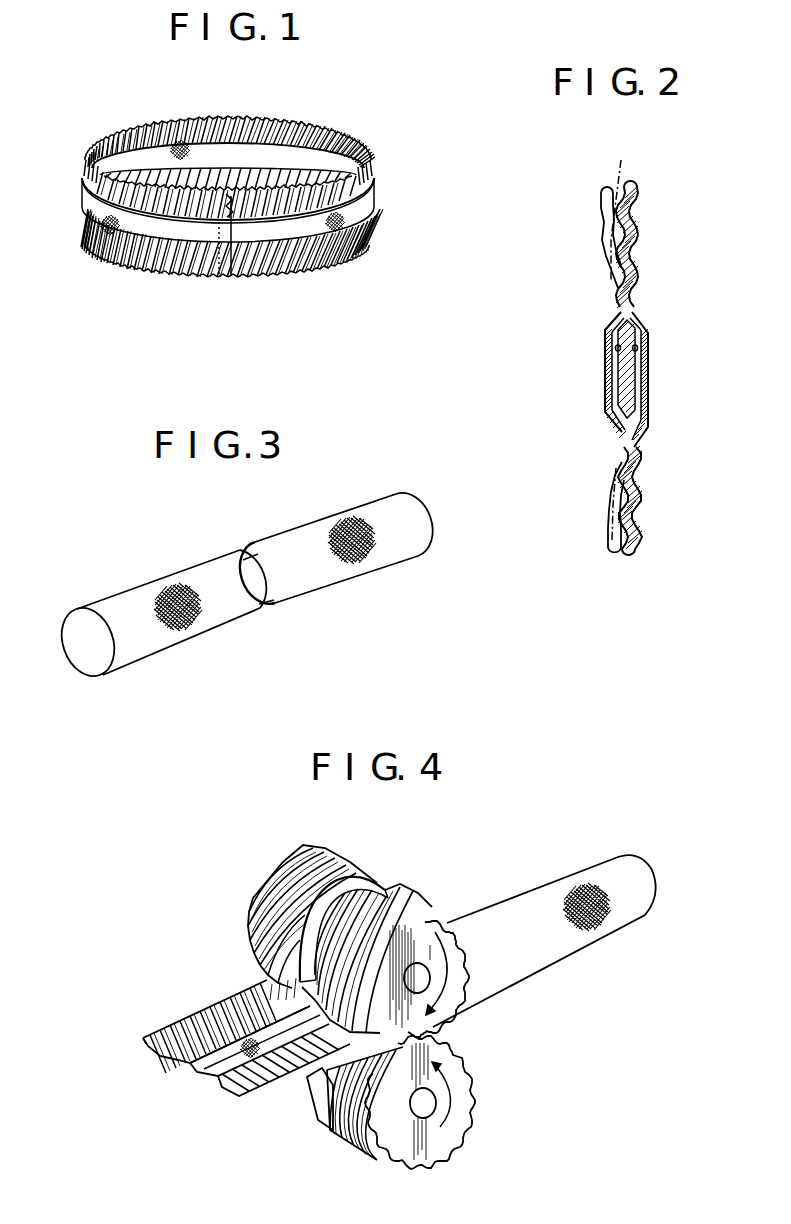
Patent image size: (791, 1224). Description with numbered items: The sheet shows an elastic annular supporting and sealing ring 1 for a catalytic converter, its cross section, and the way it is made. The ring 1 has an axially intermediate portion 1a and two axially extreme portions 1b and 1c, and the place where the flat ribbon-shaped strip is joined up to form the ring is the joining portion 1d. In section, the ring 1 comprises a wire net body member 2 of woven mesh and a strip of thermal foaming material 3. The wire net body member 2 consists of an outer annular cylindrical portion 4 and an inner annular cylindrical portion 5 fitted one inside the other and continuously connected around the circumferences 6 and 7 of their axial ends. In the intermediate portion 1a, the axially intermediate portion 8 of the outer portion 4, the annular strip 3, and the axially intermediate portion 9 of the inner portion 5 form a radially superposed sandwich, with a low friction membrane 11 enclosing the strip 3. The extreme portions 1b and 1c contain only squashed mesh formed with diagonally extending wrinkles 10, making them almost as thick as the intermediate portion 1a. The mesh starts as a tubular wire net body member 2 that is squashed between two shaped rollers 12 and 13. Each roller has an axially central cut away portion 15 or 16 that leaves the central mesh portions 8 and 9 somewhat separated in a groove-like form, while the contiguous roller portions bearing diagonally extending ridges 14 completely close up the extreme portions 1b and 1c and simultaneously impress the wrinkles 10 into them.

In FIG. 1, the annular supporting and sealing ring 1 is at (226, 198).
In FIG. 2, the annular supporting and sealing ring 1 is at (627, 360).
In FIG. 1, the axially intermediate portion 1a is at (372, 195).
In FIG. 2, the axially intermediate portion 1a is at (636, 383).
In FIG. 1, the axially extreme portion 1b is at (240, 141).
In FIG. 2, the axially extreme portion 1b is at (630, 225).
In FIG. 1, the axially extreme portion 1c is at (248, 255).
In FIG. 2, the axially extreme portion 1c is at (621, 512).
In FIG. 1, the joining portion 1d is at (233, 277).
In FIG. 1, the wire net body member 2 is at (322, 126).
In FIG. 2, the wire net body member 2 is at (638, 217).
In FIG. 3, the wire net body member 2 is at (144, 582).
In FIG. 4, the wire net body member 2 is at (529, 899).
In FIG. 1, the strip of thermal foaming material 3 is at (368, 212).
In FIG. 2, the strip of thermal foaming material 3 is at (628, 380).
In FIG. 1, the outer annular cylindrical portion 4 is at (369, 164).
In FIG. 2, the outer annular cylindrical portion 4 is at (605, 200).
In FIG. 4, the outer annular cylindrical portion 4 is at (236, 1045).
In FIG. 1, the inner annular cylindrical portion 5 is at (363, 138).
In FIG. 2, the inner annular cylindrical portion 5 is at (650, 289).
In FIG. 4, the inner annular cylindrical portion 5 is at (163, 1050).
In FIG. 1, the circumference of axial end 6 is at (91, 144).
In FIG. 2, the circumference of axial end 6 is at (635, 186).
In FIG. 1, the circumference of axial end 7 is at (113, 260).
In FIG. 2, the circumference of axial end 7 is at (641, 555).
In FIG. 2, the axially intermediate portion of outer cylindrical portion 8 is at (614, 348).
In FIG. 4, the axially intermediate portion of outer cylindrical portion 8 is at (193, 1073).
In FIG. 2, the axially intermediate portion of inner cylindrical portion 9 is at (639, 348).
In FIG. 4, the axially intermediate portion of inner cylindrical portion 9 is at (213, 1077).
In FIG. 1, the diagonally extending wrinkles 10 is at (232, 115).
In FIG. 2, the diagonally extending wrinkles 10 is at (610, 497).
In FIG. 4, the diagonally extending wrinkles 10 is at (230, 1007).
In FIG. 2, the low friction membrane 11 is at (643, 433).
In FIG. 4, the roller 12 is at (252, 903).
In FIG. 4, the roller 13 is at (475, 1099).
In FIG. 4, the diagonally extending ridges 14 is at (384, 999).
In FIG. 4, the axially central cut away portion 15 is at (378, 885).
In FIG. 4, the axially central cut away portion 16 is at (317, 1115).